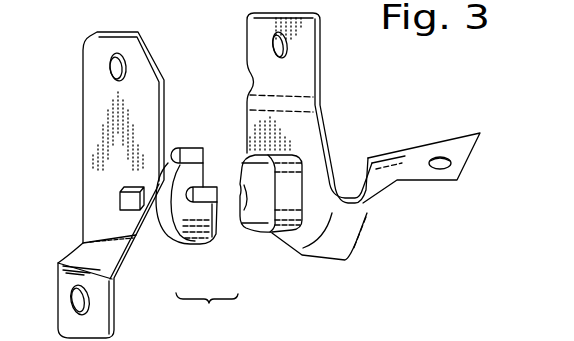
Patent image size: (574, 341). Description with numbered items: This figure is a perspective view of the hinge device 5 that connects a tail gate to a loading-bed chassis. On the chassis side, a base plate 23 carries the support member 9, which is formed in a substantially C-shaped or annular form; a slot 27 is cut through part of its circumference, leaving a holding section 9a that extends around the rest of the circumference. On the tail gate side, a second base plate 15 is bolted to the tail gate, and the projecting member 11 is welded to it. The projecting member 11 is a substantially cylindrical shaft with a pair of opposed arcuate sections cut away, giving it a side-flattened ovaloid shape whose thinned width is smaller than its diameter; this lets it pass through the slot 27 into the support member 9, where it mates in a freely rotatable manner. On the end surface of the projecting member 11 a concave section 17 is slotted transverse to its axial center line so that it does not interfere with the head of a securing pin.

The hinge device 5 is at (207, 314).
The support member 9 is at (155, 229).
The holding section 9a is at (190, 217).
The projecting member 11 is at (280, 227).
The base plate 15 is at (312, 125).
The concave section 17 is at (267, 197).
The base plate 23 is at (97, 127).
The slot 27 is at (190, 149).